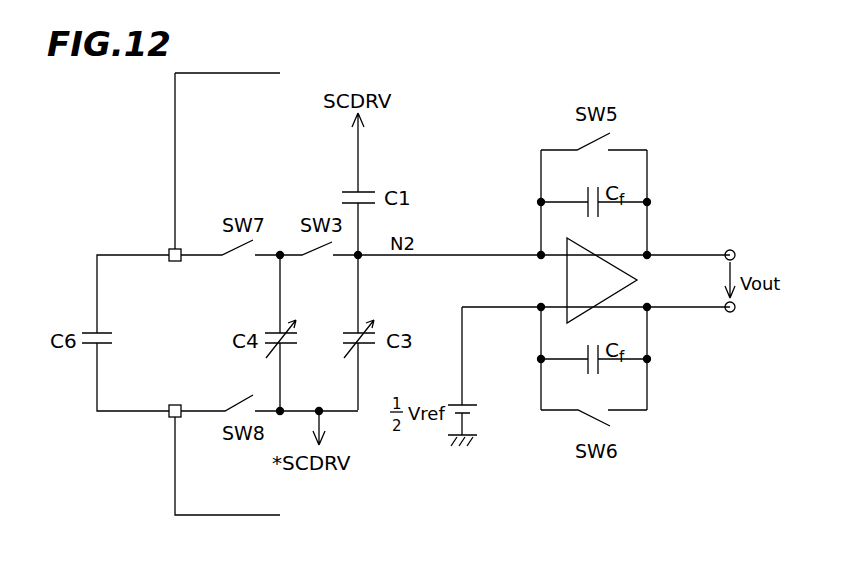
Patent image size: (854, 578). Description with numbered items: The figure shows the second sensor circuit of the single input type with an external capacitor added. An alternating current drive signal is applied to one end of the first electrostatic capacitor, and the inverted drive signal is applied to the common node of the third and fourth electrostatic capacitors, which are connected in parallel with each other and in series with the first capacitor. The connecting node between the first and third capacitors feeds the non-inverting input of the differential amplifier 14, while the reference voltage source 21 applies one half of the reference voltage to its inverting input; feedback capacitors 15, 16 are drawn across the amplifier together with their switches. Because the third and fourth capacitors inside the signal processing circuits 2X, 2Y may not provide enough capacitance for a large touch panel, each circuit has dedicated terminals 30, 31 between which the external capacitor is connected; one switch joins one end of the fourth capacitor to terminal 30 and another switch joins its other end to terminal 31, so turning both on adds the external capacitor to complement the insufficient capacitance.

The signal processing circuit 2X is at (234, 76).
The signal processing circuit 2Y is at (227, 463).
The dedicated terminal 30 is at (169, 252).
The dedicated terminal 31 is at (168, 418).
The differential amplifier 14 is at (646, 281).
The upper feedback capacitor Cf 15 is at (634, 191).
The lower feedback capacitor Cf 16 is at (634, 349).
The reference voltage source 21 is at (480, 413).